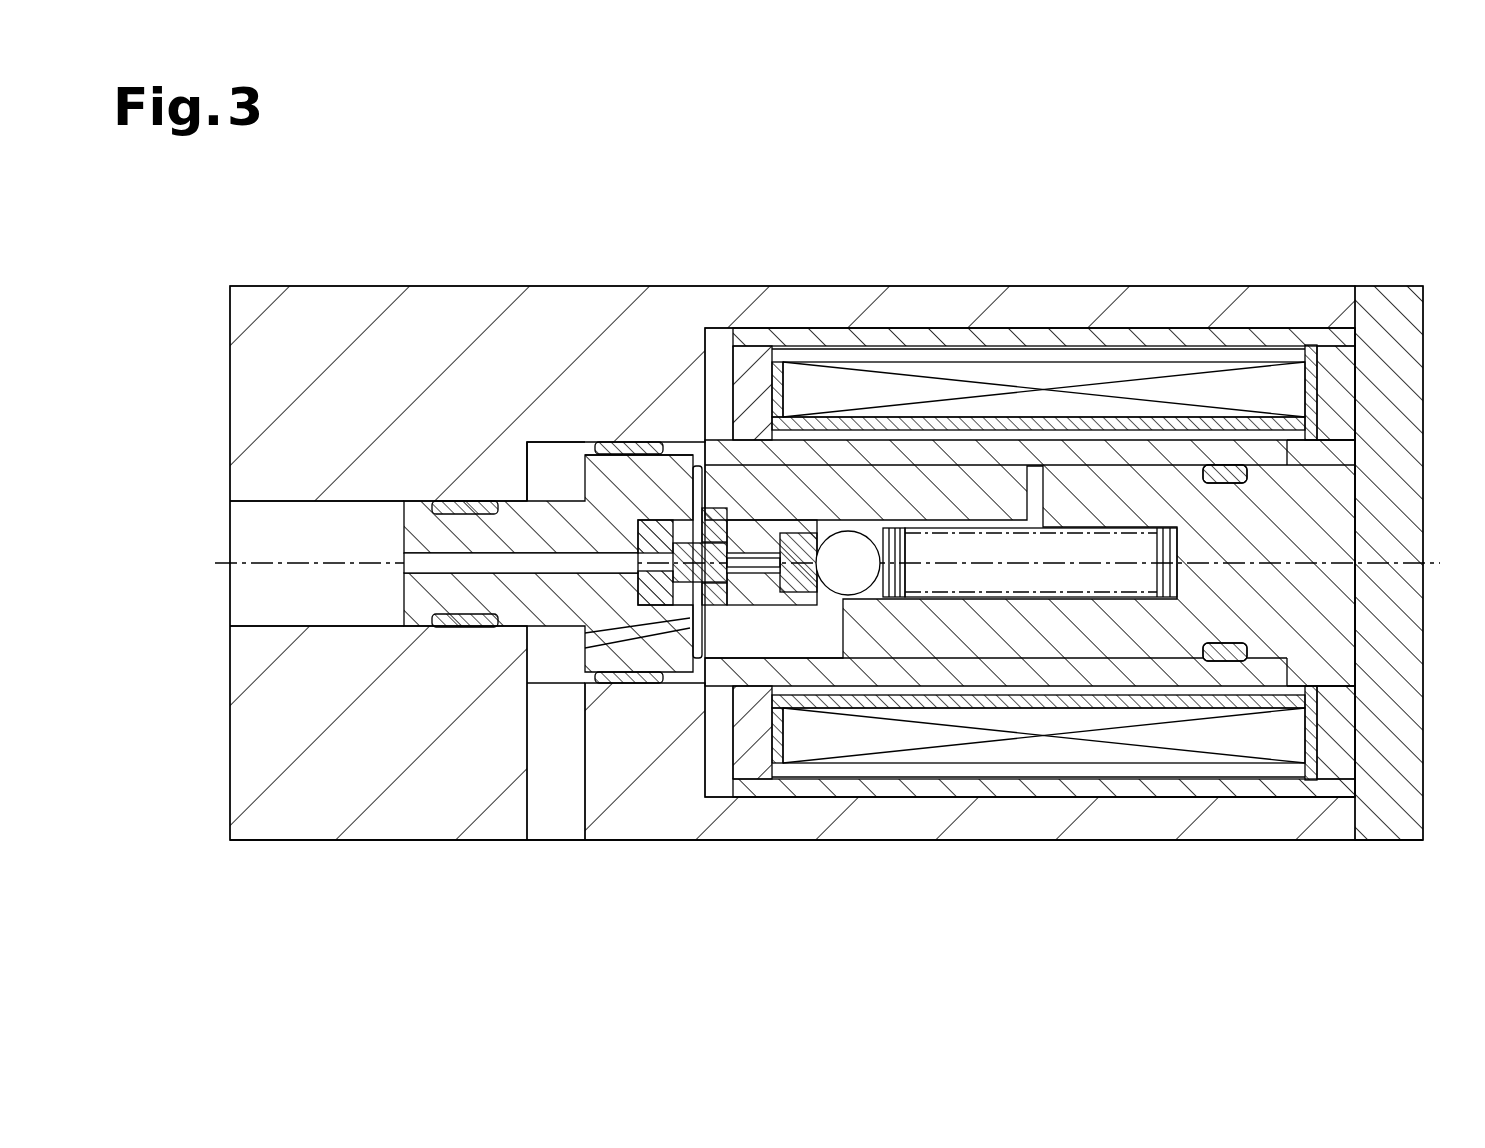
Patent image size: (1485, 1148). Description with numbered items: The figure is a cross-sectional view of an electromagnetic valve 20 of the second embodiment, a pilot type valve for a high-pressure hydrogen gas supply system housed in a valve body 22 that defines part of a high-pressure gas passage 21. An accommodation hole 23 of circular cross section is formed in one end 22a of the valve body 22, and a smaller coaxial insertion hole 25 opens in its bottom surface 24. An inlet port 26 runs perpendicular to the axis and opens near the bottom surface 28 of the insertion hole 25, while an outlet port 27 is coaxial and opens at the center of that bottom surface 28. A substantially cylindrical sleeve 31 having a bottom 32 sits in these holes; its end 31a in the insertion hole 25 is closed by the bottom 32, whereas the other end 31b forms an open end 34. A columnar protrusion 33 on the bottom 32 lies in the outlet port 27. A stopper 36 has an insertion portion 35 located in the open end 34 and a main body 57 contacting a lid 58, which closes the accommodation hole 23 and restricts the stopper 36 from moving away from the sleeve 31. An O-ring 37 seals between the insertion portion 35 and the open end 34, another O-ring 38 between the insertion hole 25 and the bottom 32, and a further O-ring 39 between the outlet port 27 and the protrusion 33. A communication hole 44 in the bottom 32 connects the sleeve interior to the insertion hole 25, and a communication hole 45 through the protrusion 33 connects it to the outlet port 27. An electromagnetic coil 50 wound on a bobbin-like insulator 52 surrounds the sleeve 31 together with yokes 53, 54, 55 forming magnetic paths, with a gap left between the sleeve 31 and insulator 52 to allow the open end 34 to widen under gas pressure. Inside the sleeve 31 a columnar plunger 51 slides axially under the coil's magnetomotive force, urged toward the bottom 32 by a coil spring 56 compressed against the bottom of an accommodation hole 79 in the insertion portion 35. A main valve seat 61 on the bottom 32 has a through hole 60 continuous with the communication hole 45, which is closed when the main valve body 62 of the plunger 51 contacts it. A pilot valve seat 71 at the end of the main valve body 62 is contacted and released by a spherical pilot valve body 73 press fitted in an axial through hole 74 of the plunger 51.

The electromagnetic valve 20 is at (1377, 194).
The high-pressure gas passage 21 is at (826, 670).
The valve body 22 is at (322, 286).
The end of the valve body 22a is at (1358, 305).
The accommodation hole 23 is at (1035, 340).
The bottom surface of the accommodation hole 24 is at (703, 364).
The insertion hole 25 is at (568, 450).
The inlet port 26 is at (530, 838).
The outlet port 27 is at (266, 501).
The bottom surface of the insertion hole 28 is at (527, 480).
The sleeve 31 is at (878, 447).
The end of the sleeve 31a is at (644, 425).
The another end of the sleeve 31b is at (1305, 354).
The bottom 32 is at (676, 450).
The protrusion 33 is at (404, 590).
The open end 34 is at (1268, 455).
The insertion portion 35 is at (1168, 640).
The stopper 36 is at (1286, 886).
The O-ring 37 is at (1218, 468).
The O-ring 38 is at (626, 684).
The O-ring 39 is at (468, 504).
The communication hole 44 is at (585, 640).
The communication hole 45 is at (404, 556).
The electromagnetic coil 50 is at (955, 757).
The plunger 51 is at (800, 462).
The insulator 52 is at (778, 757).
The yoke 53 is at (752, 770).
The yoke 54 is at (1345, 768).
The yoke 55 is at (1010, 792).
The coil spring 56 is at (1060, 530).
The main body 57 is at (1300, 668).
The lid 58 is at (1388, 840).
The through hole 60 is at (638, 560).
The main valve seat 61 is at (680, 585).
The main valve body 62 is at (755, 520).
The pilot valve seat 71 is at (796, 605).
The pilot valve body 73 is at (856, 532).
The through hole 74 is at (950, 535).
The accommodation hole 79 is at (1115, 585).